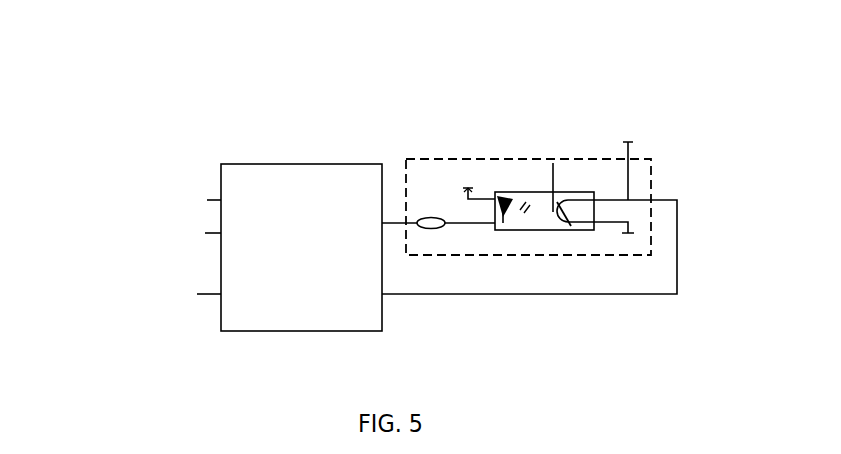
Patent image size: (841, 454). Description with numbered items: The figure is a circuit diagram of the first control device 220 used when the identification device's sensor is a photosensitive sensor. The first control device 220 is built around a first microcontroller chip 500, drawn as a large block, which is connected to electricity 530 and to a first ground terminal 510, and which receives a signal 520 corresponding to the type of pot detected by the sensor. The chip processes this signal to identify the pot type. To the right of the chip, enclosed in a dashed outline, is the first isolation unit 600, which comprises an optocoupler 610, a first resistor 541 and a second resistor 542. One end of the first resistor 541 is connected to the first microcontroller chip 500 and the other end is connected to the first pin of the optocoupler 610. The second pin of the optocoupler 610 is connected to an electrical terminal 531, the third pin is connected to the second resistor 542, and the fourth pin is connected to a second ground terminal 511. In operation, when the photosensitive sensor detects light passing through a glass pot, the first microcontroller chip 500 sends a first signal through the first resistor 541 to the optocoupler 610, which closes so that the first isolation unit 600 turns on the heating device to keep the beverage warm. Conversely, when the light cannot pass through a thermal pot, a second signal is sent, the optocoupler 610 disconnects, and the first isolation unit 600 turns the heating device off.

The first control device 220 is at (327, 115).
The first microcontroller chip 500 is at (265, 185).
The first ground terminal 510 is at (205, 233).
The second ground terminal 511 is at (628, 238).
The signal 520 is at (200, 292).
The electricity 530 is at (207, 200).
The electrical terminal 531 is at (468, 186).
The first resistor 541 is at (433, 218).
The second resistor 542 is at (629, 172).
The first isolation unit 600 is at (529, 158).
The optocoupler 610 is at (537, 230).